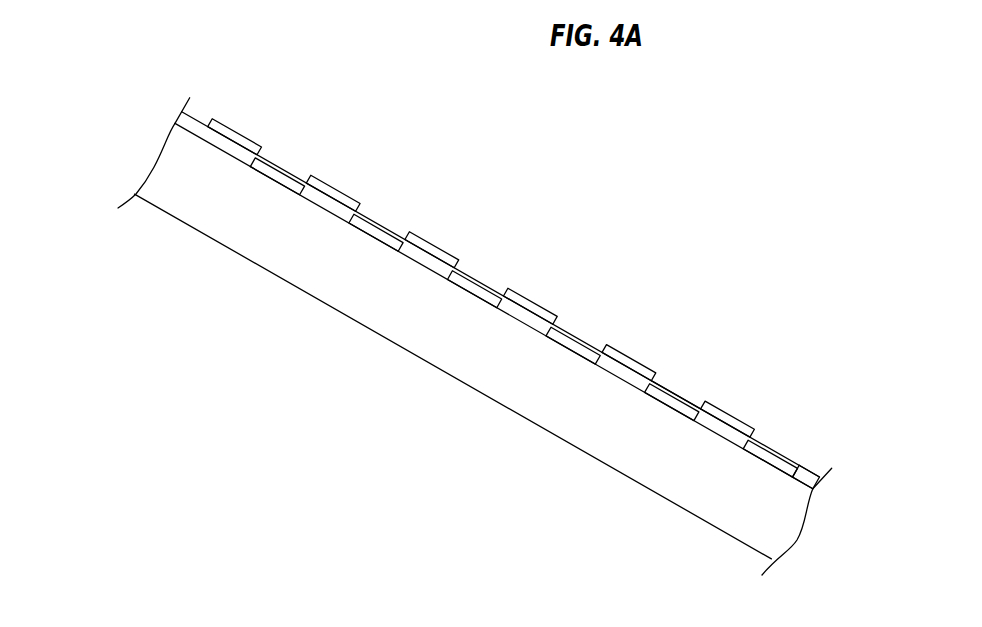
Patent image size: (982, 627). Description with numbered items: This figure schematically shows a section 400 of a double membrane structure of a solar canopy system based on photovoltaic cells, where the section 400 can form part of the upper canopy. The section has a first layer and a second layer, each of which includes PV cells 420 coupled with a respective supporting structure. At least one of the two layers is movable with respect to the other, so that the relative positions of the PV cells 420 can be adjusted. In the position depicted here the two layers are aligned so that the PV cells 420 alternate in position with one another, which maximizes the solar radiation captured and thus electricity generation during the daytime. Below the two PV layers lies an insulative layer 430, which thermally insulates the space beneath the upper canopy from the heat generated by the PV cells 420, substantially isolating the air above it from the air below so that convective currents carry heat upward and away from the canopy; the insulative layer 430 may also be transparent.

The section 400 is at (661, 251).
The PV cells 420 is at (607, 343).
The insulative layer 430 is at (367, 328).